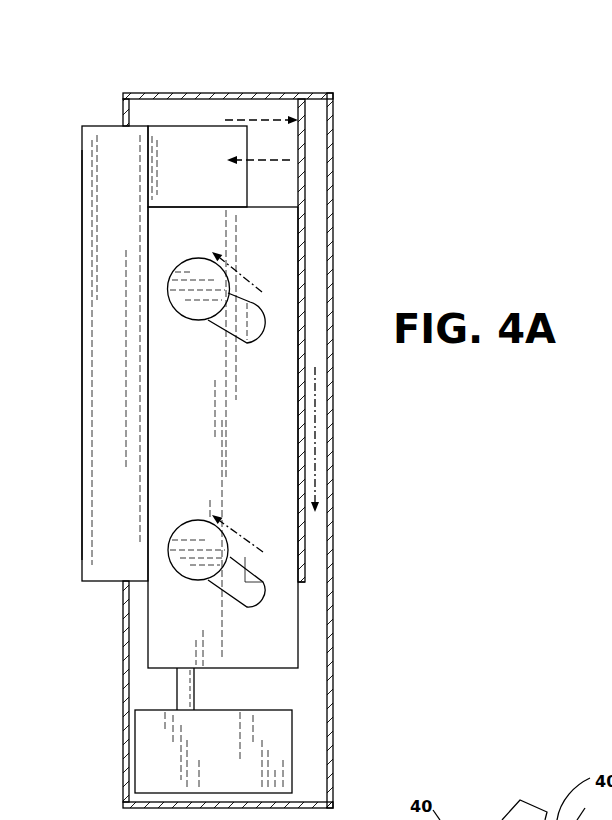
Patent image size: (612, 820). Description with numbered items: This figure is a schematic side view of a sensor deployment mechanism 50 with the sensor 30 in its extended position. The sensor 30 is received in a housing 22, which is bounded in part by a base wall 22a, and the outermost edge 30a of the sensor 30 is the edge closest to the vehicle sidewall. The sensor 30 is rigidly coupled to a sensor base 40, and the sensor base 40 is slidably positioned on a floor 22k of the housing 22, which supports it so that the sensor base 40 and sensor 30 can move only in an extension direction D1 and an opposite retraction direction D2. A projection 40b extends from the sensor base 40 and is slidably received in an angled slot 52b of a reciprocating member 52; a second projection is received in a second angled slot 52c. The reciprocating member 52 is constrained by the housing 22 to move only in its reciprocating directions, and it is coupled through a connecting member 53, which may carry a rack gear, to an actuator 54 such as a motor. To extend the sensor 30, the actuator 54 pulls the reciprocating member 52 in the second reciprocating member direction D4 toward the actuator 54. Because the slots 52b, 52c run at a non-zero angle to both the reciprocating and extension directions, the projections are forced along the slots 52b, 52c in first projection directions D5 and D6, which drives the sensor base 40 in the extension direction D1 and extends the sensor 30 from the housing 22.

The housing 22 is at (257, 406).
The base wall 22a is at (330, 272).
The floor 22k is at (302, 585).
The sensor 30 is at (94, 304).
The outermost edge 30a is at (80, 163).
The sensor base 40 is at (142, 311).
The projection 40b is at (197, 273).
The sensor deployment mechanism 50 is at (64, 548).
The reciprocating member 52 is at (215, 383).
The slot 52b is at (213, 320).
The slot 52c is at (227, 602).
The connecting member 53 is at (183, 683).
The actuator 54 is at (155, 755).
The extension direction D1 is at (258, 152).
The retraction direction D2 is at (261, 112).
The second reciprocating member direction D4 is at (327, 447).
The first projection direction D5 is at (243, 272).
The first projection direction D6 is at (237, 532).